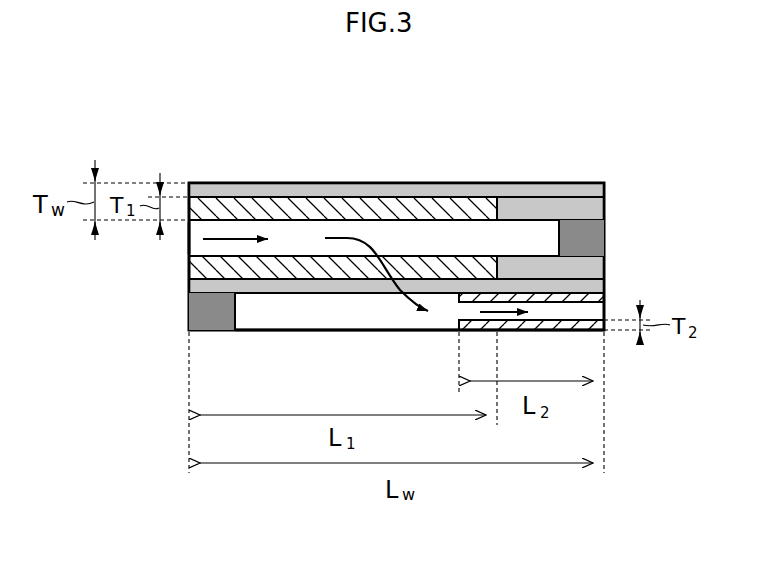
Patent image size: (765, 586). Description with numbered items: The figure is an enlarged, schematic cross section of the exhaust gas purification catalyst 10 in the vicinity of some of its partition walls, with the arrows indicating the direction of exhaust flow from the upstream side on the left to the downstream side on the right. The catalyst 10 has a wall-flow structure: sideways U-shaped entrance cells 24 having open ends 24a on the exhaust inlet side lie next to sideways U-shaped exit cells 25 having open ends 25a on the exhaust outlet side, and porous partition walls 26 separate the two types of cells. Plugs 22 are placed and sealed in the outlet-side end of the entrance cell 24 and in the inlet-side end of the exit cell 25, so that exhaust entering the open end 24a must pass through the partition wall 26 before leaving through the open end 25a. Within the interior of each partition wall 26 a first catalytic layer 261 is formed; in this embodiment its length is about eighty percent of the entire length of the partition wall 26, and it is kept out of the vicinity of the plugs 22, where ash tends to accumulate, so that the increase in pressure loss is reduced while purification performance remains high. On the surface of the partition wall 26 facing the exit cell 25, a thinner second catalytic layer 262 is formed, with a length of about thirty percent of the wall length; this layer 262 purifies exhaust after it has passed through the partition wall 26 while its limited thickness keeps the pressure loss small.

The exhaust gas purification catalyst 10 is at (662, 98).
The plug 22 is at (195, 312).
The entrance cell 24 is at (404, 237).
The open end on the exhaust inlet side 24a is at (186, 238).
The exit cell 25 is at (345, 331).
The open end on the exhaust outlet side 25a is at (612, 310).
The porous partition wall 26 is at (612, 283).
The first catalytic layer 261 is at (287, 258).
The second catalytic layer 262 is at (555, 327).